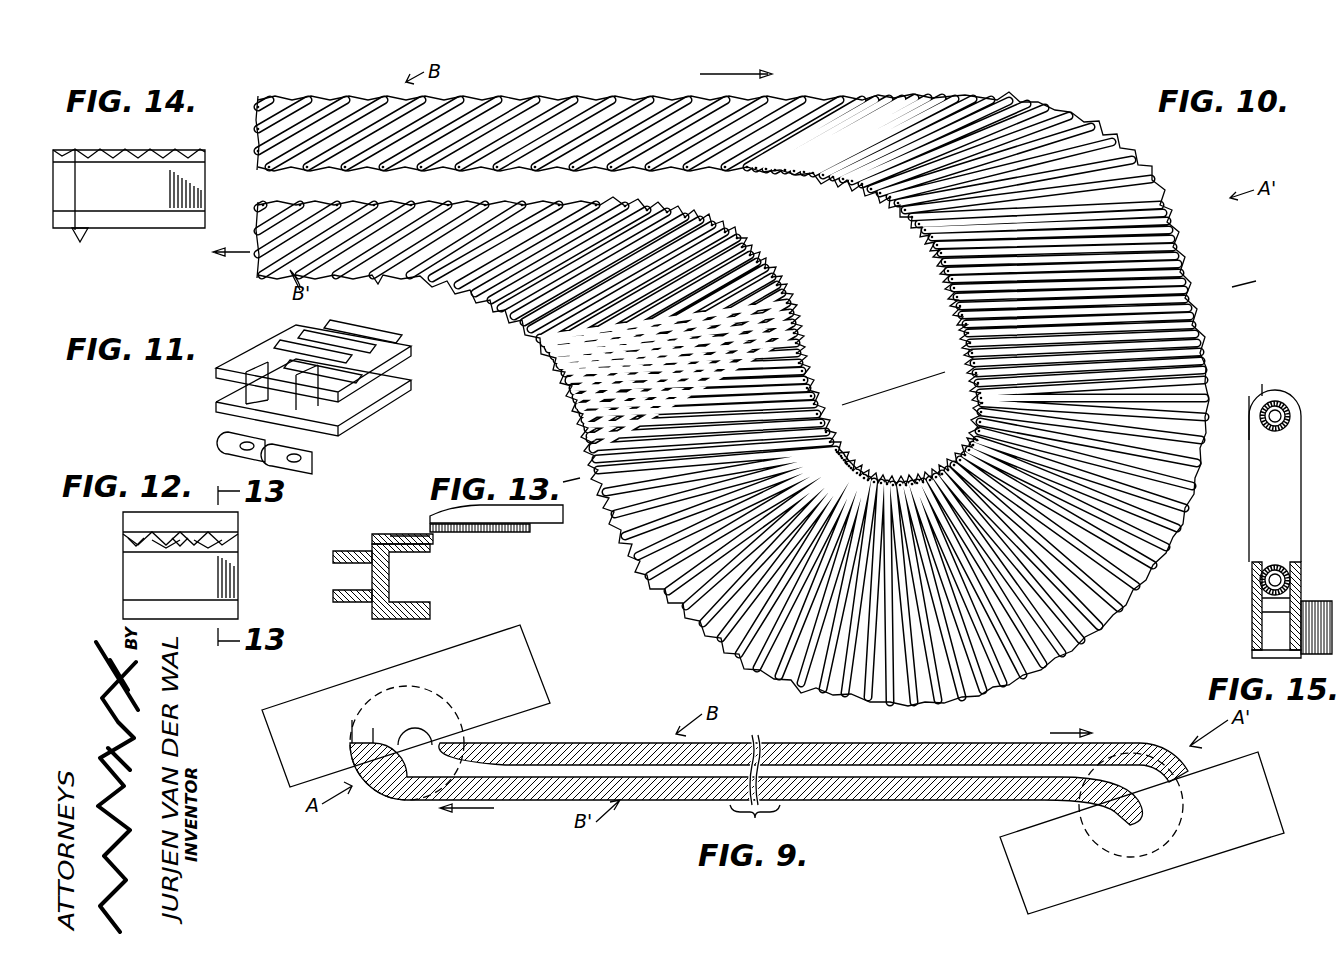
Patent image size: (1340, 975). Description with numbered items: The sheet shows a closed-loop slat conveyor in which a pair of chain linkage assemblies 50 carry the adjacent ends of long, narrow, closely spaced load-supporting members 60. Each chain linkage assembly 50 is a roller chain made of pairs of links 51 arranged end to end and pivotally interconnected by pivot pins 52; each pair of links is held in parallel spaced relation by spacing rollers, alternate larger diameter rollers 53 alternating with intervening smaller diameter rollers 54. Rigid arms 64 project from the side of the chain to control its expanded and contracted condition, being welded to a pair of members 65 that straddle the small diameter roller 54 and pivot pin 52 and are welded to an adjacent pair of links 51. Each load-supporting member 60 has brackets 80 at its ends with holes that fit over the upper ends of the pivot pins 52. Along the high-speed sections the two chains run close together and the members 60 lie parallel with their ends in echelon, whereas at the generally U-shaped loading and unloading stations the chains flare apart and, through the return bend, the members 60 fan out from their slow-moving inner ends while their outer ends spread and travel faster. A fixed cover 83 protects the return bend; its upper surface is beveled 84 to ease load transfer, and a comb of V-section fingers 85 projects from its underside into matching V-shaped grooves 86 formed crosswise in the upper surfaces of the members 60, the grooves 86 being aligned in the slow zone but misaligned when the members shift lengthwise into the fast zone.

In FIG. 10, the chain linkage assembly 50 is at (1220, 254).
In FIG. 10, the load-supporting member 60 is at (848, 98).
In FIG. 14, the load-supporting member 60 is at (80, 240).
In FIG. 11, the load-supporting member 60 is at (252, 344).
In FIG. 12, the load-supporting member 60 is at (248, 580).
In FIG. 13, the load-supporting member 60 is at (400, 584).
In FIG. 14, the V-shaped groove 86 is at (188, 150).
In FIG. 11, the V-shaped groove 86 is at (340, 332).
In FIG. 12, the V-shaped groove 86 is at (140, 546).
In FIG. 13, the V-shaped groove 86 is at (384, 534).
In FIG. 11, the bracket 80 is at (232, 438).
In FIG. 12, the cover 83 is at (123, 522).
In FIG. 13, the cover 83 is at (558, 524).
In FIG. 9, the cover 83 is at (292, 706).
In FIG. 12, the bevel 84 is at (232, 528).
In FIG. 13, the bevel 84 is at (424, 534).
In FIG. 9, the bevel 84 is at (460, 730).
In FIG. 12, the finger 85 is at (188, 548).
In FIG. 13, the finger 85 is at (484, 532).
In FIG. 15, the link 51 is at (1298, 478).
In FIG. 15, the pivot pin 52 is at (1268, 434).
In FIG. 15, the larger diameter roller 53 is at (1282, 396).
In FIG. 15, the small diameter roller 54 is at (1290, 414).
In FIG. 15, the rigid arm 64 is at (1322, 590).
In FIG. 15, the member 65 is at (1258, 626).